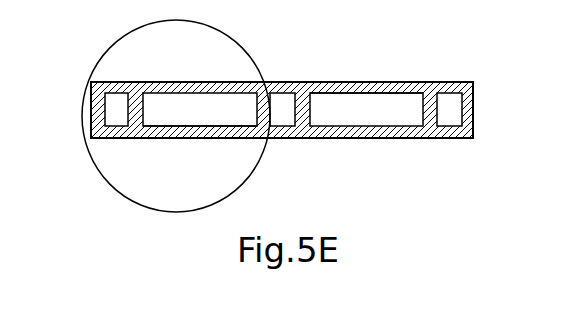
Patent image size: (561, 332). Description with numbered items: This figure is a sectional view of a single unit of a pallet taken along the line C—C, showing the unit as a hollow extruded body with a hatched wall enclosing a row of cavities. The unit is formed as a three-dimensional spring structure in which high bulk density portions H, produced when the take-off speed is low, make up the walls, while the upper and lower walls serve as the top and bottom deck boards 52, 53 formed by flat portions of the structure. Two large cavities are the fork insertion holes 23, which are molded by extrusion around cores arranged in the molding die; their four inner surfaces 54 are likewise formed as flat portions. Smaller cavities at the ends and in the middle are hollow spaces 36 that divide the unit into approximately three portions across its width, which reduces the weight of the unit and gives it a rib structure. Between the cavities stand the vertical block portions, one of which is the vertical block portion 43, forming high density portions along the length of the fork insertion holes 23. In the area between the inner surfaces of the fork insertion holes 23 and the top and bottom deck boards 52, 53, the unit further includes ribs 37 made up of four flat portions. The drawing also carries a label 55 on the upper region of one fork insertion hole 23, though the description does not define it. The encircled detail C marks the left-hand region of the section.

The fork insertion hole 23 is at (210, 113).
The hollow space 36 is at (117, 108).
The rib 37 is at (216, 66).
The vertical block portion 43 is at (303, 137).
The top deck board 52 is at (285, 92).
The bottom deck board 53 is at (437, 137).
The inner surface 54 is at (177, 128).
The chamber ceiling 55 is at (361, 93).
The high bulk density portion H is at (392, 82).
The section line C— C is at (108, 52).